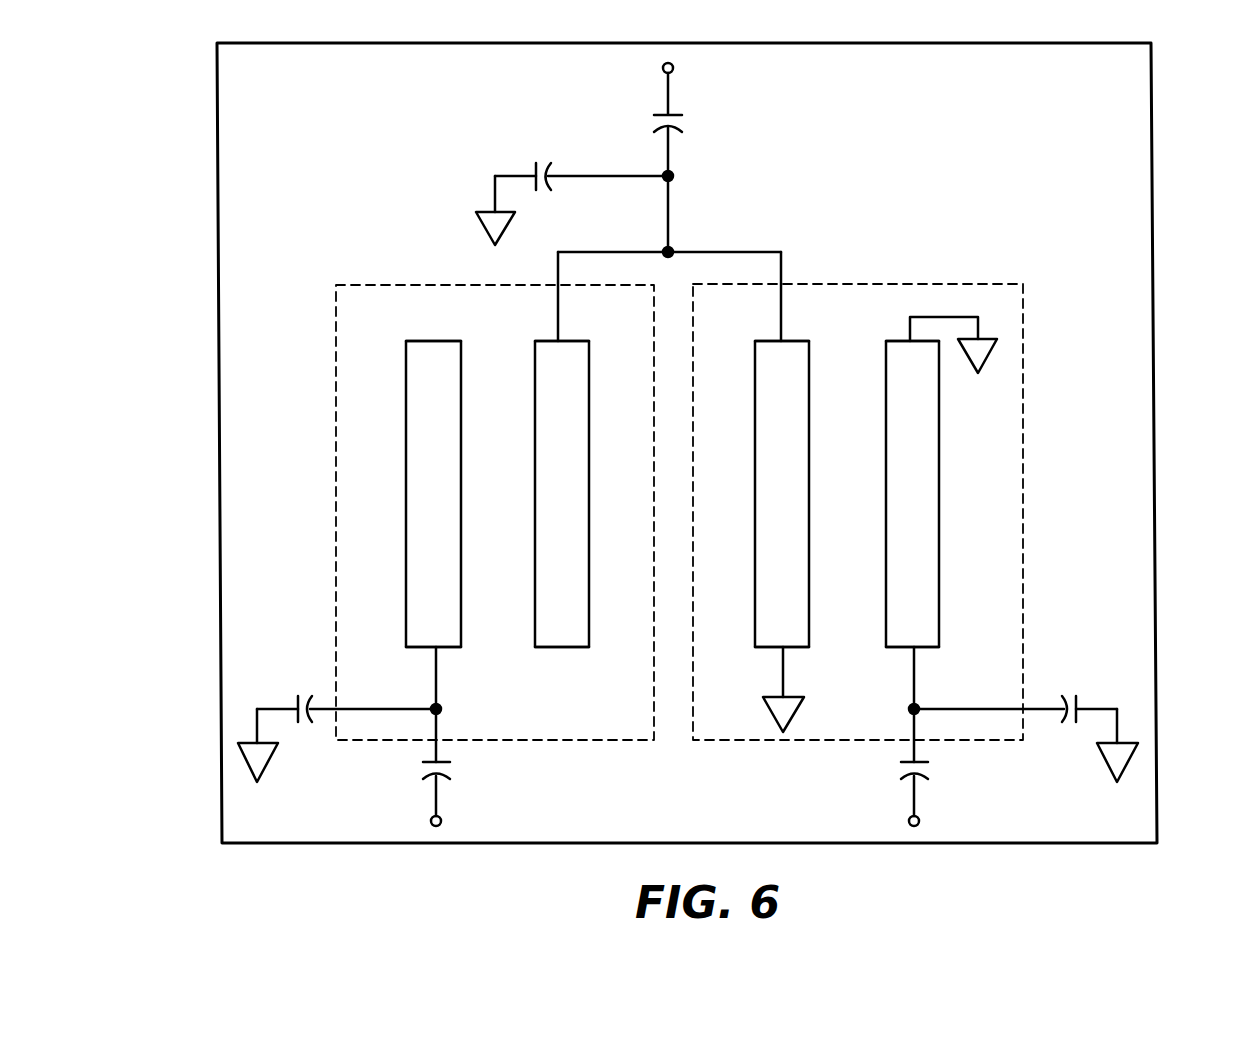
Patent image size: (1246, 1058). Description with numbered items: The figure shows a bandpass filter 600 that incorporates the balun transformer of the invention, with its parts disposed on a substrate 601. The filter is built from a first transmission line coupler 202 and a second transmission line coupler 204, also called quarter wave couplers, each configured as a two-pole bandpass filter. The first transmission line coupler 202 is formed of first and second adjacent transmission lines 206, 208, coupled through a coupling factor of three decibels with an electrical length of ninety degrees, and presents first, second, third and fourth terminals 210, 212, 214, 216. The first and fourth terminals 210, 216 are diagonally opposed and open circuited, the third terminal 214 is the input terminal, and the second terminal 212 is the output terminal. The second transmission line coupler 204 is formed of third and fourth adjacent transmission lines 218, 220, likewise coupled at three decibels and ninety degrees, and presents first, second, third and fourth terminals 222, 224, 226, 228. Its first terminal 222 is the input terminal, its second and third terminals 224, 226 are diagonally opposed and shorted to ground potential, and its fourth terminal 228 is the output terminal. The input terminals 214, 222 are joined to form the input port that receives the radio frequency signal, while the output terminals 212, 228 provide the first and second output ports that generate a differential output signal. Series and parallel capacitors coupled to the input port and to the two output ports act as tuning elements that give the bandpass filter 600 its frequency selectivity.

The bandpass filter 600 is at (1245, 847).
The substrate 601 is at (217, 380).
The first transmission line coupler 202 is at (335, 380).
The second transmission line coupler 204 is at (1023, 378).
The first transmission line 206 is at (430, 509).
The second transmission line 208 is at (562, 508).
The first terminal 210 is at (421, 341).
The second terminal 212 is at (422, 648).
The third terminal 214 is at (555, 341).
The fourth terminal 216 is at (555, 648).
The third transmission line 218 is at (782, 510).
The fourth transmission line 220 is at (917, 510).
The first terminal 222 is at (771, 341).
The second terminal 224 is at (768, 648).
The third terminal 226 is at (905, 341).
The fourth terminal 228 is at (908, 648).